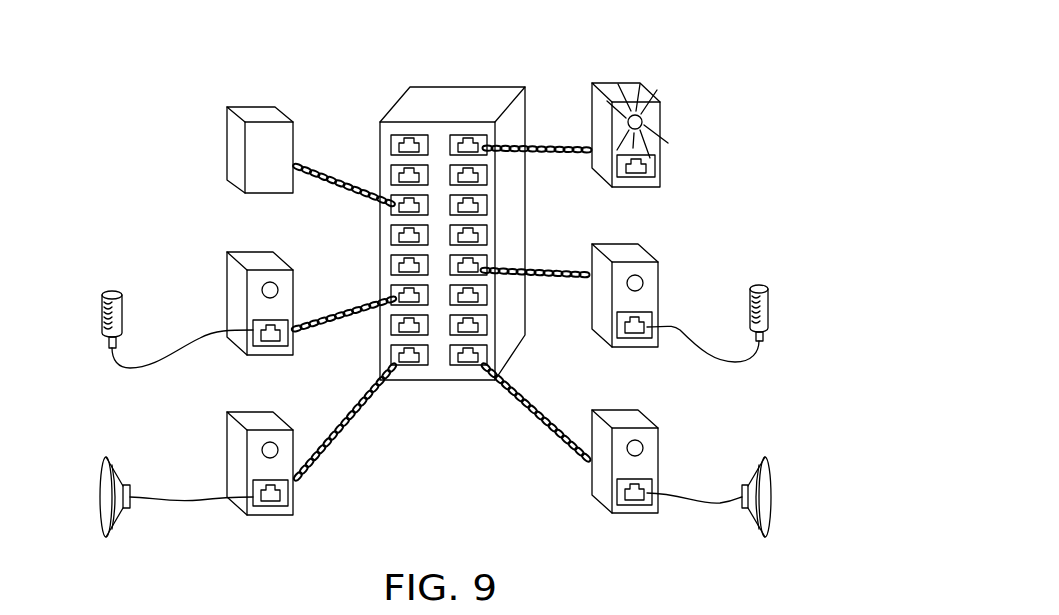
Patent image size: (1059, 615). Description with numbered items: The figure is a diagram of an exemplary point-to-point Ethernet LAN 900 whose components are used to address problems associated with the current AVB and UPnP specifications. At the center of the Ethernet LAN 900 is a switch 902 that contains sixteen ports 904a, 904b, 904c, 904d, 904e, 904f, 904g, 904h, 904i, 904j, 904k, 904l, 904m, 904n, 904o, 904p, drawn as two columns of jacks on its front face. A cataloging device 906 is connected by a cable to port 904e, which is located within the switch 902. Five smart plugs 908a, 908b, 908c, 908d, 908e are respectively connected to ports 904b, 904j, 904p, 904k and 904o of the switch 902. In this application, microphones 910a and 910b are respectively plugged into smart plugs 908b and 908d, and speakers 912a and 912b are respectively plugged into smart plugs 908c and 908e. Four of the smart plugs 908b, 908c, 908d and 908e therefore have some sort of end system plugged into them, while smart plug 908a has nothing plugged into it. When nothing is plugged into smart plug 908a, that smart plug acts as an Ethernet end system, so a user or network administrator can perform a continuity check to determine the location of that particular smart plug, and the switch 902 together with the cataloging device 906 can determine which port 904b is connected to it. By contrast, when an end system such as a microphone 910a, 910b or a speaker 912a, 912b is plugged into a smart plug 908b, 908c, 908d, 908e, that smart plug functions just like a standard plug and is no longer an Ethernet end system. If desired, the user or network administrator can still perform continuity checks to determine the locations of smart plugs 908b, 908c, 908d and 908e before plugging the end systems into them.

The Ethernet LAN 900 is at (753, 43).
The switch 902 is at (413, 86).
The port 904a is at (378, 132).
The port 904b is at (487, 136).
The port 904c is at (391, 170).
The port 904d is at (487, 176).
The port 904e is at (391, 200).
The port 904f is at (487, 206).
The port 904g is at (391, 235).
The port 904h is at (487, 235).
The port 904i is at (391, 265).
The port 904j is at (487, 262).
The port 904k is at (391, 294).
The port 904l is at (487, 296).
The port 904m is at (391, 326).
The port 904n is at (487, 327).
The port 904o is at (391, 356).
The port 904p is at (515, 364).
The cataloging device 906 is at (225, 163).
The smart plug 908a is at (661, 120).
The smart plug 908b is at (661, 281).
The smart plug 908c is at (661, 447).
The smart plug 908d is at (225, 290).
The smart plug 908e is at (225, 447).
The microphone 910a is at (759, 285).
The microphone 910b is at (112, 291).
The speaker 912a is at (765, 460).
The speaker 912b is at (106, 460).